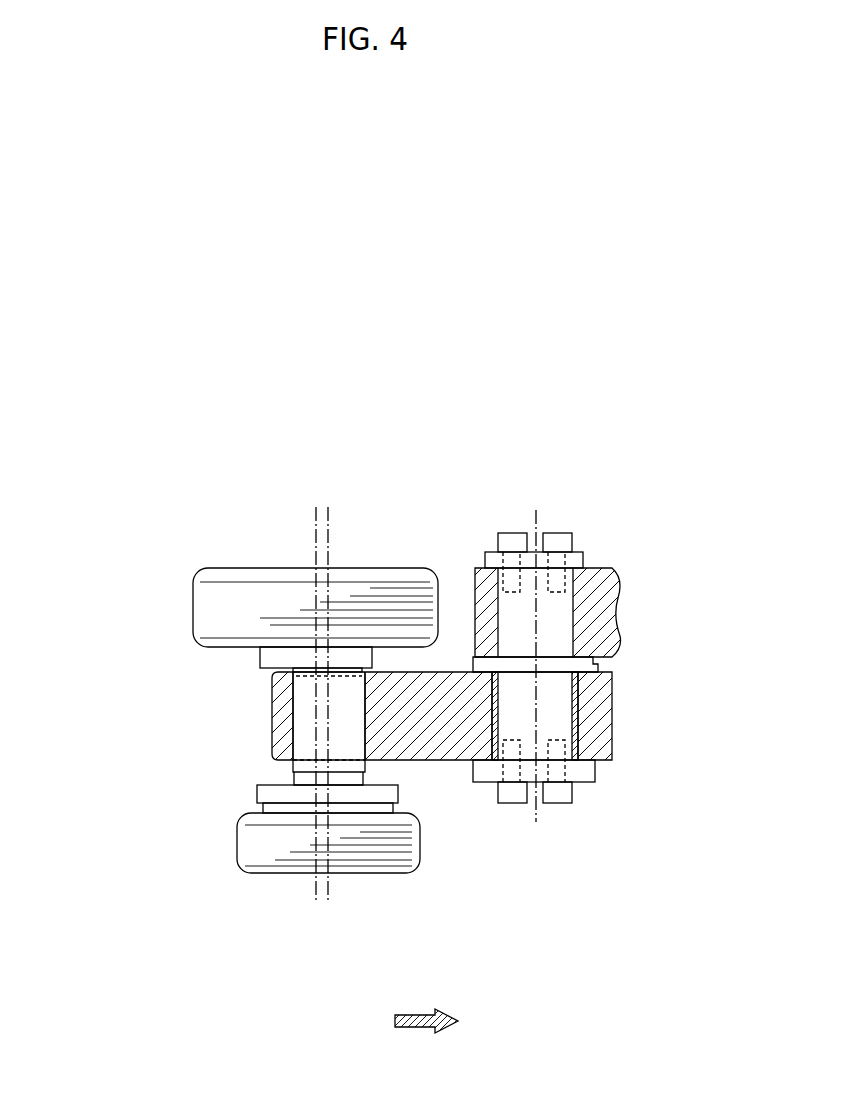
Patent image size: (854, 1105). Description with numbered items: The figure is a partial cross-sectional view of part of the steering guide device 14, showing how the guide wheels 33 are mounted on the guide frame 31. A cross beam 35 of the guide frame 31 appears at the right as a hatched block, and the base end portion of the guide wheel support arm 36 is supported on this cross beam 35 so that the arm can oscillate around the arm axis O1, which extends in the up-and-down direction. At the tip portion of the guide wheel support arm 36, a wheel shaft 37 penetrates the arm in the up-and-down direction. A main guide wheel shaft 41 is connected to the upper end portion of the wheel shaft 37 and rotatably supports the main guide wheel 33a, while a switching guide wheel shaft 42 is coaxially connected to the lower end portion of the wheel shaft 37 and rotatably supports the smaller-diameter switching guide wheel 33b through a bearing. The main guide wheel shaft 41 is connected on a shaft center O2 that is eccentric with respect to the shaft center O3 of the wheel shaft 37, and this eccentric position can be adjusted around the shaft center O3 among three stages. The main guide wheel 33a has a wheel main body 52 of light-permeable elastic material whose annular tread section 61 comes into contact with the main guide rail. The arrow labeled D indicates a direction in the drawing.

The steering guide device 14 is at (708, 457).
The guide frame 31 is at (650, 492).
The cross beam 35 is at (600, 588).
The guide wheel support arm 36 is at (437, 735).
The wheel shaft 37 is at (305, 733).
The main guide wheel shaft 41 is at (290, 655).
The switching guide wheel shaft 42 is at (347, 778).
The guide wheels 33 is at (85, 630).
The main guide wheel 33a is at (197, 618).
The switching guide wheel 33b is at (240, 840).
The tread section 61 is at (203, 602).
The wheel main body 52 is at (254, 590).
The arm axis O1 is at (537, 520).
The shaft center of the main guide wheel shaft O2 is at (316, 520).
The shaft center of the wheel shaft O3 is at (328, 520).
The direction D is at (420, 1015).